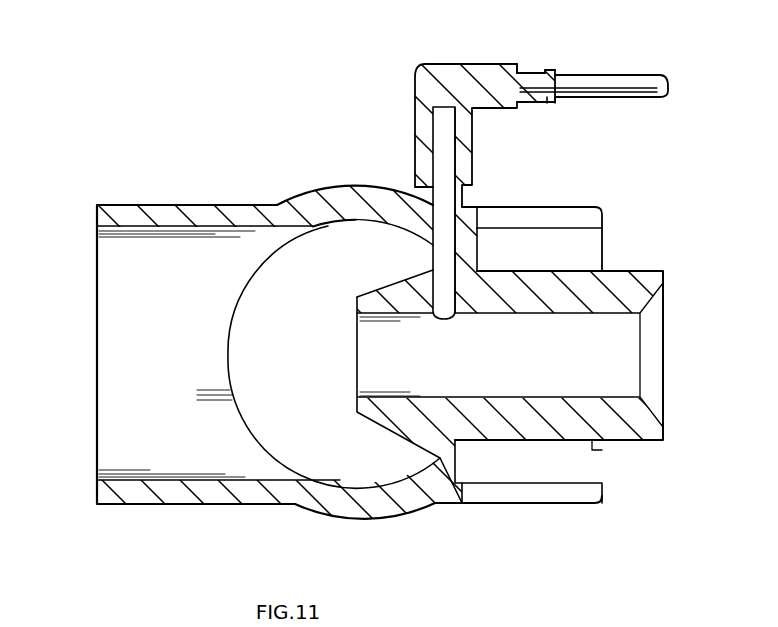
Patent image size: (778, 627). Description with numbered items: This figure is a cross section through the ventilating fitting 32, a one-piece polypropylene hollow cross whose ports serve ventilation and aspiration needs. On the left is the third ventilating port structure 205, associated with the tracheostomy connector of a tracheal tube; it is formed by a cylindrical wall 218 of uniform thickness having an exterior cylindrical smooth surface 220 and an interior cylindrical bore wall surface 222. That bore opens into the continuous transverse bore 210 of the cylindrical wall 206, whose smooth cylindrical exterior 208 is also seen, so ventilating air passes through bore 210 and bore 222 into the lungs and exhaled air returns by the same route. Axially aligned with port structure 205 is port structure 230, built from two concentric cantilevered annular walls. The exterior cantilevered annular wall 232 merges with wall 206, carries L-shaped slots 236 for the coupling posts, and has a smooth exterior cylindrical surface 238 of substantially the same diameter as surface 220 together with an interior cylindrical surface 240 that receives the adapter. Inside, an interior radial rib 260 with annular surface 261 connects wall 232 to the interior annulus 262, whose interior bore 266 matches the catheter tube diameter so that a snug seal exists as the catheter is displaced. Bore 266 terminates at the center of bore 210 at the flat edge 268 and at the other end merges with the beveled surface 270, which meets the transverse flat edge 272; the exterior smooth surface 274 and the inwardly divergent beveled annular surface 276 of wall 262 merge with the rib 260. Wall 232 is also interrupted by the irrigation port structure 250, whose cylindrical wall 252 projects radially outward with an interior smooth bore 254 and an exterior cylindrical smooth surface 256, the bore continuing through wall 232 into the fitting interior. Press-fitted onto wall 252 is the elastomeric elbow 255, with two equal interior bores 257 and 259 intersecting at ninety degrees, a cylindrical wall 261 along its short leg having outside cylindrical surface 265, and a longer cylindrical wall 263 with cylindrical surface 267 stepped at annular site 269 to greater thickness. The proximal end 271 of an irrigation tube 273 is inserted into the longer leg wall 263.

The ventilating fitting 32 is at (215, 186).
The third ventilating port structure 205 is at (163, 354).
The cylindrical wall 206 is at (400, 205).
The smooth cylindrical exterior 208 is at (342, 186).
The smooth cylindrical interior 210 is at (333, 232).
The cylindrical wall 218 is at (142, 495).
The exterior cylindrical smooth surface 220 is at (238, 505).
The interior cylindrical bore wall surface 222 is at (107, 238).
The port structure 230 is at (604, 511).
The exterior cantilevered annular wall 232 is at (472, 217).
The L-shaped slots 236 is at (518, 222).
The exterior cylindrical surface 238 is at (504, 220).
The interior cylindrical surface 240 is at (553, 232).
The irrigation port structure 250 is at (443, 100).
The cylindrical wall 252 is at (498, 46).
The interior smooth bore 254 is at (420, 92).
The elastomeric elbow 255 is at (517, 70).
The exterior cylindrical smooth surface 256 is at (425, 128).
The interior bore 257 is at (425, 140).
The interior bore 259 is at (556, 82).
The interior radial rib 260 is at (467, 246).
The cylindrical wall 261 is at (465, 132).
The interior annulus 262 is at (531, 297).
The cylindrical wall 263 is at (535, 105).
The outside cylindrical surface 265 is at (467, 156).
The interior bore 266 is at (565, 320).
The cylindrical surface 267 is at (553, 70).
The flat edge 268 is at (355, 302).
The annular site 269 is at (535, 73).
The beveled surface 270 is at (653, 360).
The proximal end 271 is at (547, 102).
The transverse flat edge 272 is at (665, 272).
The irrigation tube 273 is at (667, 80).
The exterior smooth surface 274 is at (598, 445).
The beveled annular surface 276 is at (391, 283).